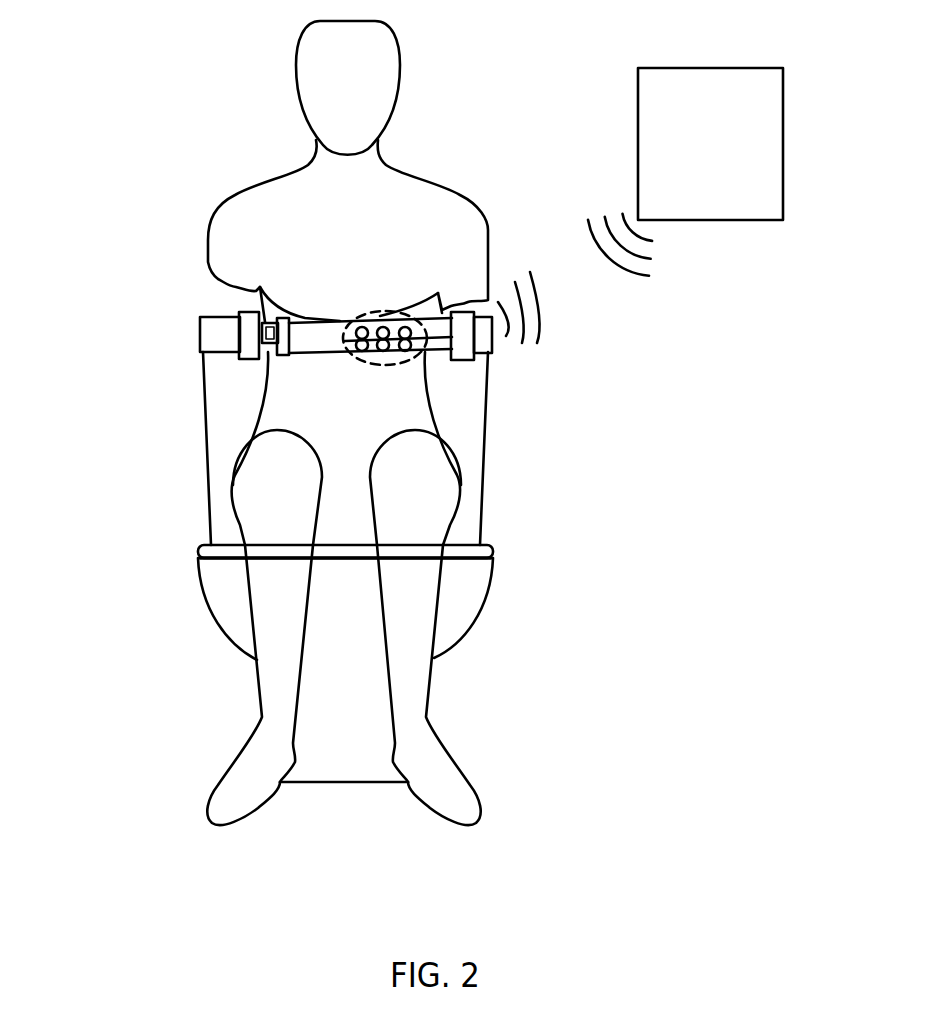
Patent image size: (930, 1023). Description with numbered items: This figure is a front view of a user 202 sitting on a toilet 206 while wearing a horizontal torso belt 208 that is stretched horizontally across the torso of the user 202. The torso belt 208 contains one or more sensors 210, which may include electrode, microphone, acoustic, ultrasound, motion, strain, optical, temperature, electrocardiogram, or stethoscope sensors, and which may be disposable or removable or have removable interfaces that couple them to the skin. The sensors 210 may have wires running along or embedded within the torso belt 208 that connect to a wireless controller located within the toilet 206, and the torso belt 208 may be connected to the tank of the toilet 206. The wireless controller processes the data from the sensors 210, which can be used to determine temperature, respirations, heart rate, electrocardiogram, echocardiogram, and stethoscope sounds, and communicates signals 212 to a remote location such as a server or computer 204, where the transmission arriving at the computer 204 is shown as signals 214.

The user 202 is at (450, 207).
The computer 204 is at (732, 85).
The toilet 206 is at (215, 383).
The horizontal torso belt 208 is at (313, 327).
The sensors 210 is at (382, 308).
The signals 212 is at (545, 328).
The wireless signal at device 214 is at (642, 275).